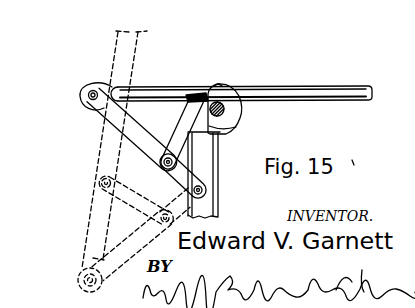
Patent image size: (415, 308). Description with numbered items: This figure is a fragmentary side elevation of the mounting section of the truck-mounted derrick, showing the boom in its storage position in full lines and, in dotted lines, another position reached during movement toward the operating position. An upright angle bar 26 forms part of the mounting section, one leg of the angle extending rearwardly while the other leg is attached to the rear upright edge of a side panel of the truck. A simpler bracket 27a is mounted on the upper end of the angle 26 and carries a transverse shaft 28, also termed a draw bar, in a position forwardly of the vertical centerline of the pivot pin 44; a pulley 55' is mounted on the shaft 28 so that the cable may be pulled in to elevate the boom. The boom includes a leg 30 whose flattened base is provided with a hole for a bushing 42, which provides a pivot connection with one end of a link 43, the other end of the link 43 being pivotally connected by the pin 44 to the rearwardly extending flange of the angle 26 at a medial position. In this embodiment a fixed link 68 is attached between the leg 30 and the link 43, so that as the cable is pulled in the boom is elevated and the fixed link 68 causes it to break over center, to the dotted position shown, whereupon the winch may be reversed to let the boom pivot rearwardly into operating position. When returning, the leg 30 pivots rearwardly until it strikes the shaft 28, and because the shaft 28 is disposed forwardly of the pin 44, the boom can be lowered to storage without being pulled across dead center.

The upright angle bar 26 is at (212, 169).
The bracket 27a is at (237, 128).
The transverse shaft 28 is at (224, 111).
The leg 30 is at (314, 89).
The bushing 42 is at (84, 91).
The link 43 is at (136, 127).
The pin 44 is at (203, 191).
The pulley 55' is at (234, 77).
The fixed link 68 is at (208, 142).